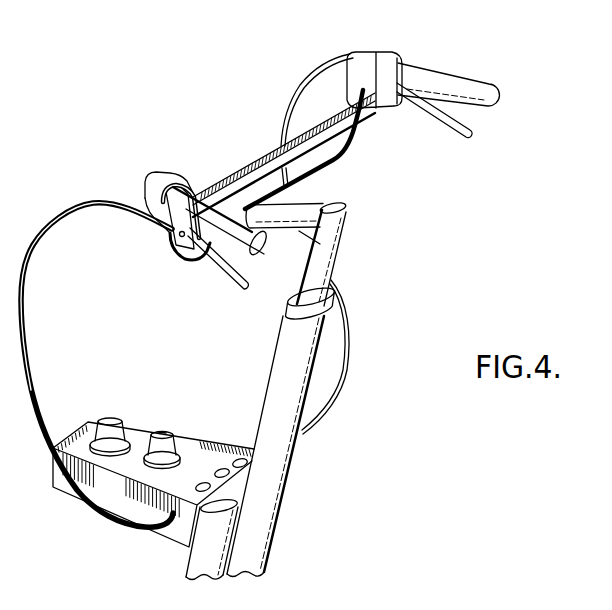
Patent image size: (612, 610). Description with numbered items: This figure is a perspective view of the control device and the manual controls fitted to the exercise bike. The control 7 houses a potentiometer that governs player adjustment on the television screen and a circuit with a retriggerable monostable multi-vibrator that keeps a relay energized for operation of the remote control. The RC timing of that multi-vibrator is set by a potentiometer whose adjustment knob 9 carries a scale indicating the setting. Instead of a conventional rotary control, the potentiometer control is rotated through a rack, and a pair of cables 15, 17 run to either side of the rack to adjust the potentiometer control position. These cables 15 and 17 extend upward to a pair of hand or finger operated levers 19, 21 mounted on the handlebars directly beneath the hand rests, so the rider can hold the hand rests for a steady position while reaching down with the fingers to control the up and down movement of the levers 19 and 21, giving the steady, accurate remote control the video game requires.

The control 7 is at (200, 447).
The adjustment knob 9 is at (110, 417).
The cable 15 is at (298, 100).
The cable 17 is at (97, 208).
The hand lever 19 is at (432, 120).
The hand lever 21 is at (220, 270).